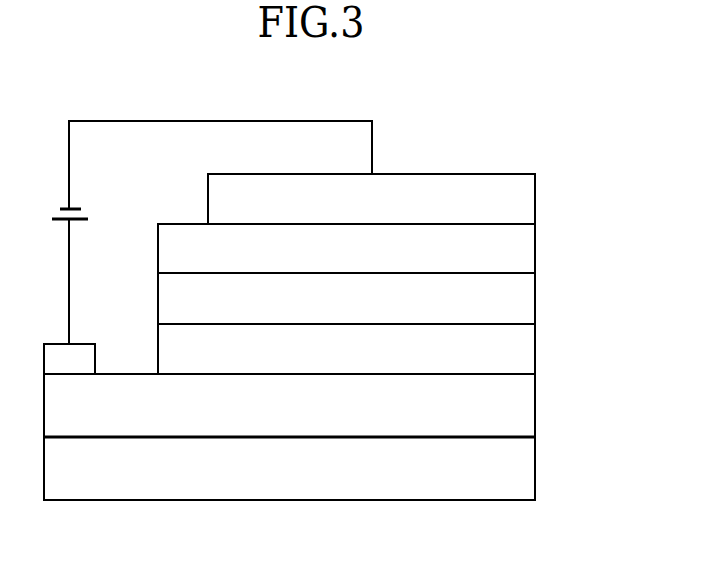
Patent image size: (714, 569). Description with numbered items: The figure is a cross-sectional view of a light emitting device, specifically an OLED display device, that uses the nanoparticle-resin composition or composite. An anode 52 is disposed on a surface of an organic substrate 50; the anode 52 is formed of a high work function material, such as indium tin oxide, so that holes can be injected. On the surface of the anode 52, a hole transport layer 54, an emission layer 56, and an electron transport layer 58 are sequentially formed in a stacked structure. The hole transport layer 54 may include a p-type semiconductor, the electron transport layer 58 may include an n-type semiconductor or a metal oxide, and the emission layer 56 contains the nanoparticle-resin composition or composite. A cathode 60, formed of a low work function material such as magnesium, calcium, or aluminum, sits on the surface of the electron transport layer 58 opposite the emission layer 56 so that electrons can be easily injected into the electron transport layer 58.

The organic substrate 50 is at (536, 464).
The anode 52 is at (536, 402).
The hole transport layer 54 is at (536, 348).
The emission layer 56 is at (536, 296).
The electron transport layer 58 is at (536, 247).
The cathode 60 is at (536, 198).